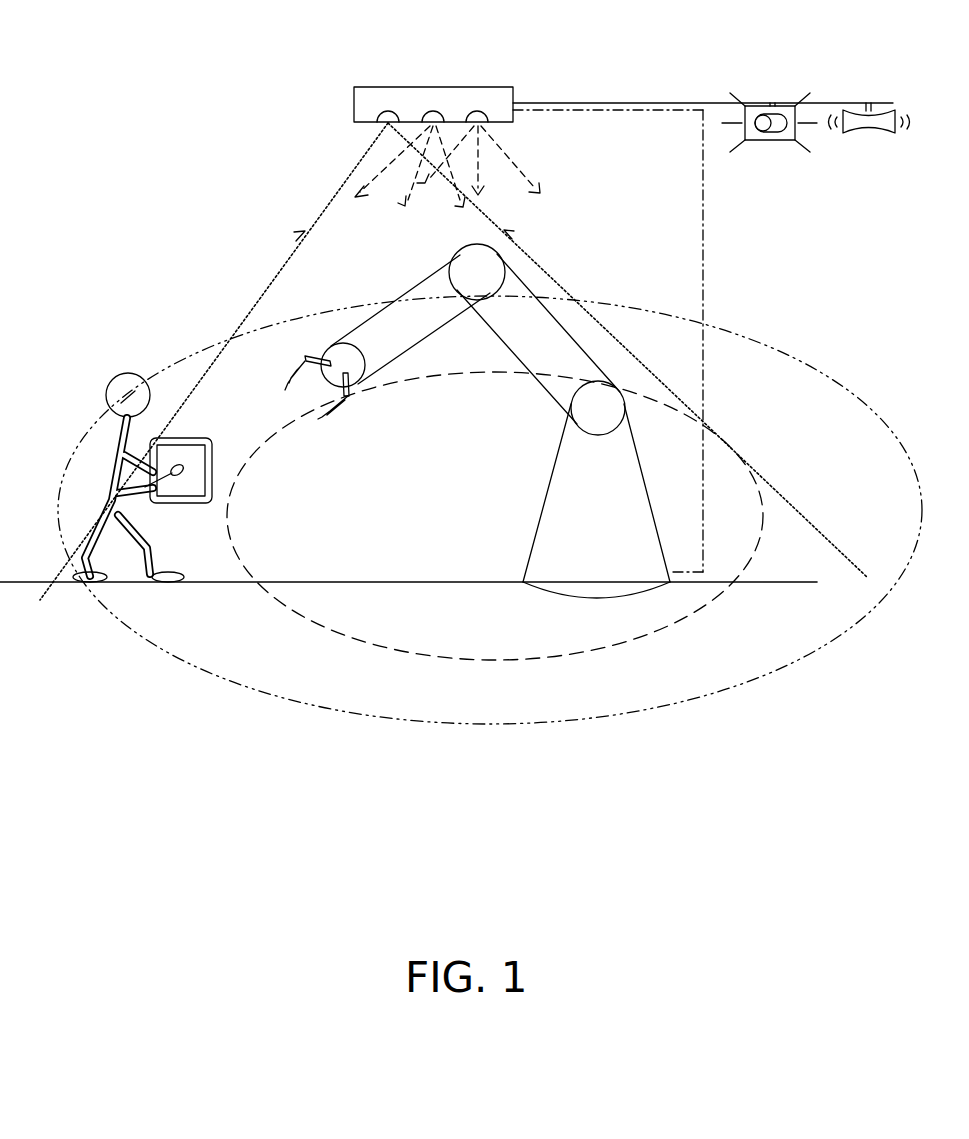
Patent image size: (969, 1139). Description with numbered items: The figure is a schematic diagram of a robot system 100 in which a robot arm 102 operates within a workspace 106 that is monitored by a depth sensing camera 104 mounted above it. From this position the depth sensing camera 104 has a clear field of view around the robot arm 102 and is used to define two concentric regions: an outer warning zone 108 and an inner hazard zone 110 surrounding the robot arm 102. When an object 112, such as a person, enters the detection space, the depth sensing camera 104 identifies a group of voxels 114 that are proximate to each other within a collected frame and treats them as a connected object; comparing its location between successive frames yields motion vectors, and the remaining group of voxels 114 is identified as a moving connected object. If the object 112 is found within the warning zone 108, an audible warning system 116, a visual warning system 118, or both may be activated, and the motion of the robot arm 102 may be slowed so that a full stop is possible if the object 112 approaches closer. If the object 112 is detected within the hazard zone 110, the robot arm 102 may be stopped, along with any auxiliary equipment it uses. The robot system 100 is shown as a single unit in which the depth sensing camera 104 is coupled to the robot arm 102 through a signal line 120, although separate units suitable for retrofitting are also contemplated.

The robot system 100 is at (487, 939).
The robot arm 102 is at (552, 518).
The depth sensing camera 104 is at (447, 87).
The workspace 106 is at (208, 218).
The warning zone 108 is at (232, 680).
The hazard zone 110 is at (232, 540).
The object 112 is at (130, 372).
The group of voxels 114 is at (212, 442).
The audible warning system 116 is at (868, 136).
The visual warning system 118 is at (775, 142).
The signal line 120 is at (703, 238).